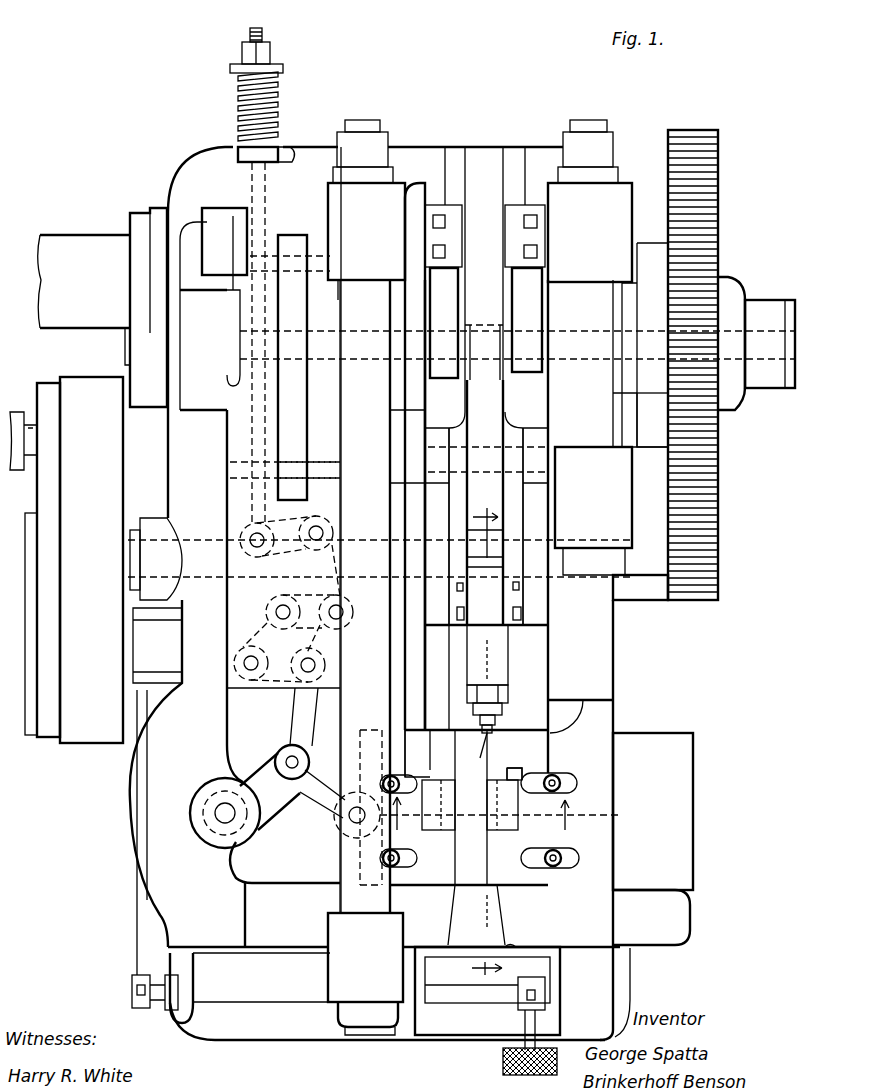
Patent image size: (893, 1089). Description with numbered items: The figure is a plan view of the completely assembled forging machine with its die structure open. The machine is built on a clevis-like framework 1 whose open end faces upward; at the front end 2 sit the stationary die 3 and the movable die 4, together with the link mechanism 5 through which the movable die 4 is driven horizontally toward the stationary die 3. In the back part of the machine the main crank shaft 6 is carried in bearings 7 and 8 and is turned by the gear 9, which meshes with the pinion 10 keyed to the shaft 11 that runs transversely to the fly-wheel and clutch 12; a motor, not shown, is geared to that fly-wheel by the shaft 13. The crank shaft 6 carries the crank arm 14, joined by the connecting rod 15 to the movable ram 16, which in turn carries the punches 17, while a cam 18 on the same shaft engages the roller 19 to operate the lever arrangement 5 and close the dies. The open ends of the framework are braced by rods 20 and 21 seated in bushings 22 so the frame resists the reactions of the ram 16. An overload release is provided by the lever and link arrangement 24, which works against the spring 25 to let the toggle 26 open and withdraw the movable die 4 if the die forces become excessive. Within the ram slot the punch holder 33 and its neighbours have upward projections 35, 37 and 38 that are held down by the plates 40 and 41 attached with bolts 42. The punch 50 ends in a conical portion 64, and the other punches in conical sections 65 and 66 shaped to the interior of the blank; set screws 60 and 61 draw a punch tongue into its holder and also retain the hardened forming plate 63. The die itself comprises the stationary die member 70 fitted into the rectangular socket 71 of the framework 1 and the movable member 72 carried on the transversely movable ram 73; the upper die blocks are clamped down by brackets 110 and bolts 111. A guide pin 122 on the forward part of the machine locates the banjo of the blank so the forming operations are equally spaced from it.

The framework 1 is at (612, 648).
The front end 2 is at (600, 765).
The stationary die 3 is at (525, 842).
The movable die 4 is at (400, 780).
The link mechanism 5 is at (254, 768).
The main crank shaft 6 is at (365, 345).
The bearing 7 is at (213, 333).
The bearing 8 is at (632, 300).
The gear 9 is at (703, 241).
The pinion 10 is at (712, 573).
The shaft 11 is at (644, 560).
The fly-wheel and clutch 12 is at (117, 483).
The shaft 13 is at (32, 432).
The crank arm 14 is at (528, 302).
The connecting rod 15 is at (500, 393).
The movable ram 16 is at (512, 530).
The punches 17 is at (497, 667).
The cam 18 is at (299, 386).
The roller 19 is at (300, 468).
The rod 20 is at (380, 500).
The rod 21 is at (598, 430).
The bushings 22 is at (480, 561).
The lever and link arrangement 24 is at (313, 656).
The spring 25 is at (274, 112).
The toggle 26 is at (345, 795).
The punch holder 33 is at (528, 1033).
The projection 35 is at (470, 540).
The projection 37 is at (470, 558).
The projection 38 is at (470, 570).
The plate 40 is at (481, 594).
The plate 41 is at (489, 616).
The bolts 42 is at (521, 592).
The punch 50 is at (500, 712).
The set screw 60 is at (505, 693).
The set screw 61 is at (505, 700).
The hardened forming plate 63 is at (508, 708).
The conical portion 64 is at (478, 708).
The conical section 65 is at (480, 721).
The conical section 66 is at (475, 752).
The stationary die member 70 is at (515, 775).
The rectangular socket 71 is at (533, 750).
The movable member 72 is at (403, 767).
The transversely movable ram 73 is at (371, 742).
The brackets 110 is at (570, 866).
The bolts 111 is at (418, 870).
The guide pin 122 is at (513, 947).